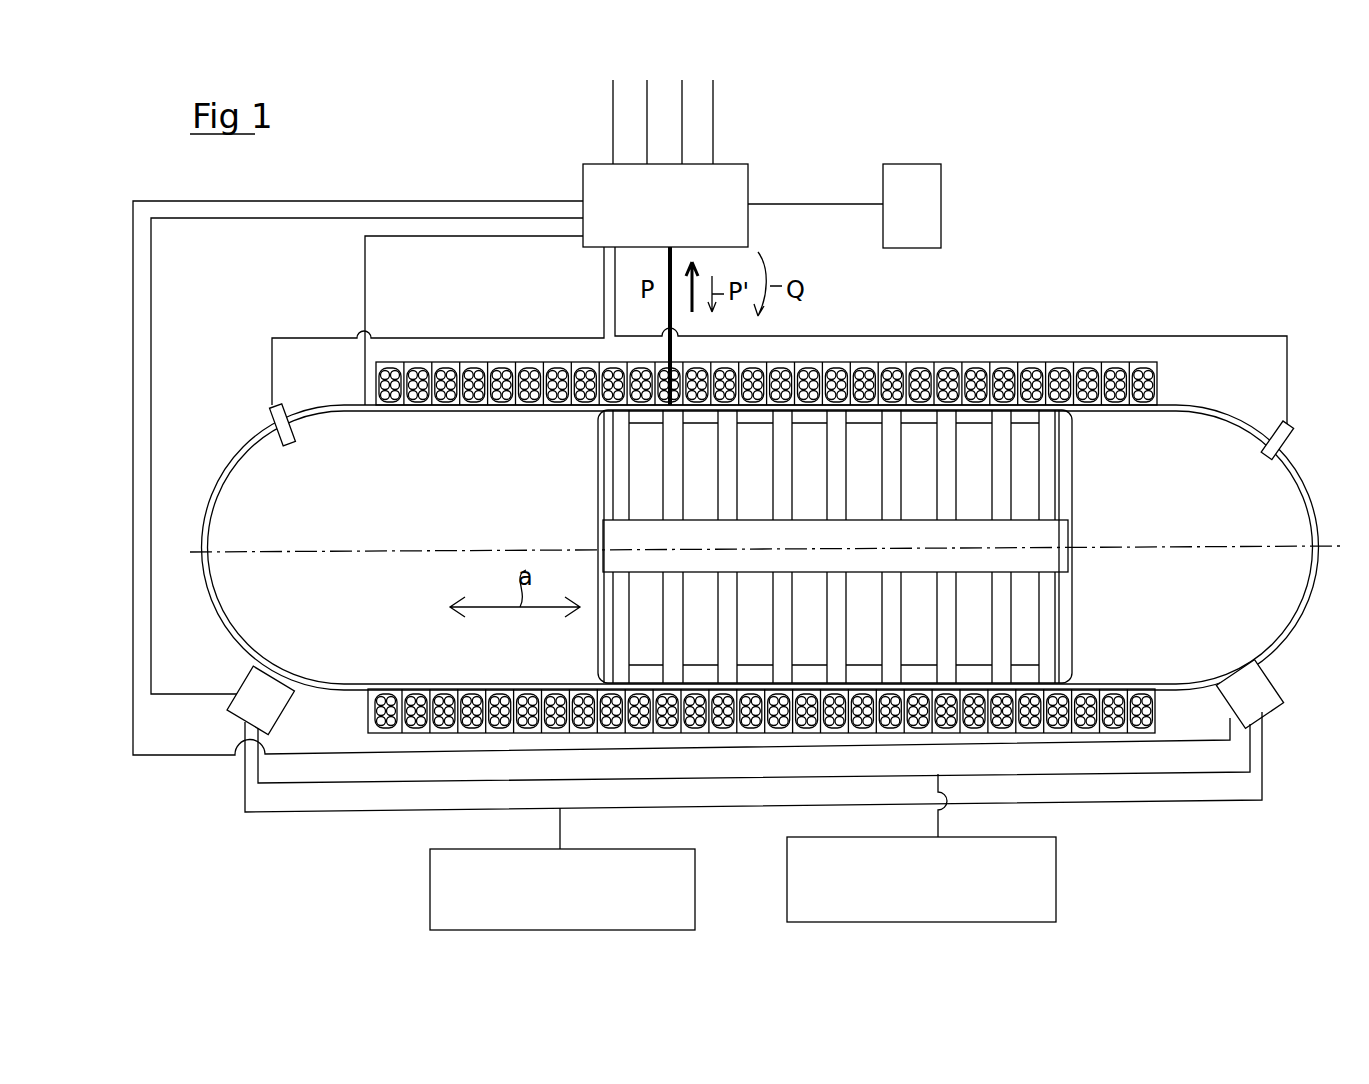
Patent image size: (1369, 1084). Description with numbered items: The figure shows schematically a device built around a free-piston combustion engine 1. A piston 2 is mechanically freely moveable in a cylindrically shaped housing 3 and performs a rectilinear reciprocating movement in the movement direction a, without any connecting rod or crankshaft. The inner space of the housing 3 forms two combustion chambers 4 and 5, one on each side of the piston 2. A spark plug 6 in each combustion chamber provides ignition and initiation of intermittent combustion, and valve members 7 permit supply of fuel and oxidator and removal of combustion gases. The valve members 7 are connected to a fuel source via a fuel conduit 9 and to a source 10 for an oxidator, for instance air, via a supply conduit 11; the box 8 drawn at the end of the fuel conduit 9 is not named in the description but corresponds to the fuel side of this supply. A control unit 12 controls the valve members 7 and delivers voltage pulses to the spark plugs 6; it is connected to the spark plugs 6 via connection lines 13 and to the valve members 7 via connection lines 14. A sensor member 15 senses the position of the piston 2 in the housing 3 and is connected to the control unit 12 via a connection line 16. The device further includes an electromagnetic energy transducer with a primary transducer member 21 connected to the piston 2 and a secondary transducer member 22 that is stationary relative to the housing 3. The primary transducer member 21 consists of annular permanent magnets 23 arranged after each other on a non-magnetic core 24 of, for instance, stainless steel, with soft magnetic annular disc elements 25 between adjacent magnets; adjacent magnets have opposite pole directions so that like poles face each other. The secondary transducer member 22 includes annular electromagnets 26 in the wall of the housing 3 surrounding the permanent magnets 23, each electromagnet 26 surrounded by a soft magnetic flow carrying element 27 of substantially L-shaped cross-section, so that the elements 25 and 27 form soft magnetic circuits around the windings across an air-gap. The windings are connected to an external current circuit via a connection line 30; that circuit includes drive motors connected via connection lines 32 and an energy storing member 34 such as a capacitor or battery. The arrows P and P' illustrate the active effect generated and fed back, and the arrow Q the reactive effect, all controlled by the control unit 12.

The combustion engine 1 is at (1182, 258).
The piston 2 is at (848, 546).
The housing 3 is at (1300, 612).
The combustion chamber 4 is at (1222, 535).
The combustion chamber 5 is at (342, 535).
The spark plug 6 is at (296, 434).
The valve members 7 is at (274, 712).
The electrical load/energy storage 8 is at (432, 878).
The fuel conduit 9 is at (720, 806).
The source for an oxidator 10 is at (1052, 866).
The supply conduit 11 is at (291, 784).
The control unit 12 is at (738, 170).
The connection lines 13 is at (456, 338).
The connection lines 14 is at (344, 203).
The sensor member 15 is at (450, 408).
The connection line 16 is at (366, 281).
The primary transducer member 21 is at (1074, 452).
The secondary transducer member 22 is at (762, 504).
The annular permanent magnets 23 is at (968, 498).
The non-magnetic core 24 is at (1068, 530).
The annular disc elements 25 is at (727, 476).
The annular electromagnets 26 is at (846, 364).
The flow carrying element 27 is at (938, 364).
The connection line 30 is at (668, 308).
The connection lines 32 is at (613, 102).
The energy storing member 34 is at (928, 172).